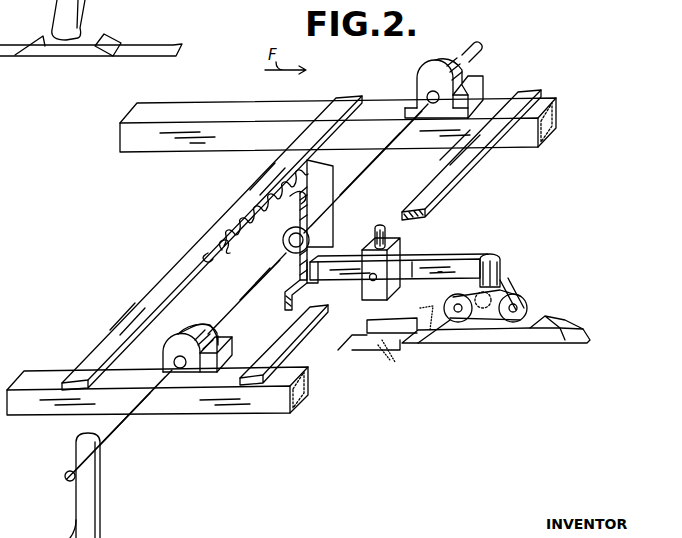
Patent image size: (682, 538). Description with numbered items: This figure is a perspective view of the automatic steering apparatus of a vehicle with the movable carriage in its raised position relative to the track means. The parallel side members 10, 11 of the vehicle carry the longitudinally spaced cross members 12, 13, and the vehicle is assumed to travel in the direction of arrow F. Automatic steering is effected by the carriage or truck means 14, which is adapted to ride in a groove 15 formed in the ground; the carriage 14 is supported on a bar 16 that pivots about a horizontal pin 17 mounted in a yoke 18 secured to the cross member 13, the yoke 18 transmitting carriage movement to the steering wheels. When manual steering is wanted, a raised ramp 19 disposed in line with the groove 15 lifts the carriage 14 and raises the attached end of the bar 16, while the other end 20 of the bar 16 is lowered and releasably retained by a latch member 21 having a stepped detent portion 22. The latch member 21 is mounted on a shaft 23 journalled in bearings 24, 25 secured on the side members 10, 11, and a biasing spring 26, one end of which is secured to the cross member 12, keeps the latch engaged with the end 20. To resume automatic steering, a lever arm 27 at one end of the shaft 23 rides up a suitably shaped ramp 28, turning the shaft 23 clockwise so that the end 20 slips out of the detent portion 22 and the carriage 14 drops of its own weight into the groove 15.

The side member 10 is at (42, 372).
The side member 11 is at (120, 136).
The cross member 12 is at (232, 212).
The cross member 13 is at (445, 178).
The carriage 14 is at (512, 292).
The groove 15 is at (373, 334).
The bar 16 is at (412, 279).
The horizontal pin 17 is at (370, 291).
The yoke 18 is at (401, 246).
The raised ramp 19 is at (482, 343).
The other end of the bar 20 is at (314, 274).
The latch member 21 is at (332, 240).
The stepped detent portion 22 is at (290, 298).
The shaft 23 is at (366, 168).
The bearing 24 is at (203, 320).
The bearing 25 is at (437, 55).
The biasing spring 26 is at (262, 243).
The lever arm 27 is at (90, 500).
The ramp 28 is at (114, 41).